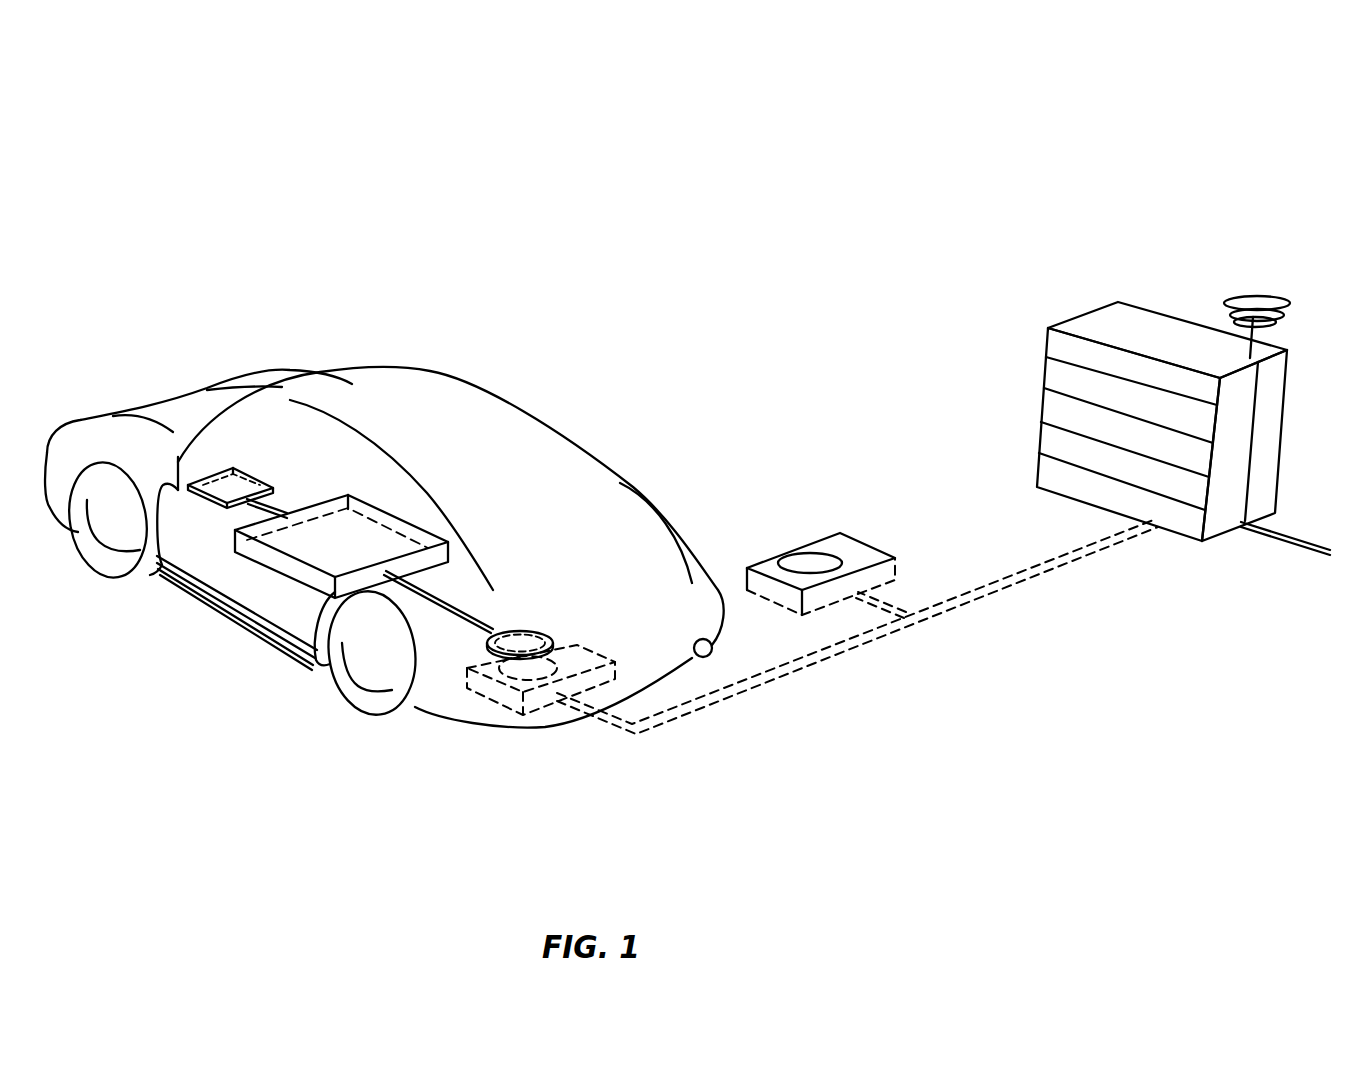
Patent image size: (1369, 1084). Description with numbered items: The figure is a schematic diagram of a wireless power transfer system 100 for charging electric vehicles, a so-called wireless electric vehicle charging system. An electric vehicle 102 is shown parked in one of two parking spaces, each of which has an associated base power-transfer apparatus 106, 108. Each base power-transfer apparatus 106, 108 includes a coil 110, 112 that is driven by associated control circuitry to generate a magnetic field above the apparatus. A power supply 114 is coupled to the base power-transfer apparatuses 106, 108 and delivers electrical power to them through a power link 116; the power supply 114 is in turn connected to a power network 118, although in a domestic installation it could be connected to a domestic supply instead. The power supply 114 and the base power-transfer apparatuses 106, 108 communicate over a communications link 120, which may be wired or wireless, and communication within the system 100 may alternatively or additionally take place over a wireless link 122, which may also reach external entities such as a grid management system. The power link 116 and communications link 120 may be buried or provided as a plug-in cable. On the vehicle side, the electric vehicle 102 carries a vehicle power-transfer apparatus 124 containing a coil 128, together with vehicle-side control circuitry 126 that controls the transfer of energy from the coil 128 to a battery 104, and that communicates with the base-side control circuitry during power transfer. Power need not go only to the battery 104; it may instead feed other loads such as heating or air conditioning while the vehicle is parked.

The wireless power transfer system 100 is at (1279, 84).
The electric vehicle 102 is at (167, 398).
The battery 104 is at (257, 477).
The base power-transfer apparatus 106 is at (490, 670).
The base power-transfer apparatus 108 is at (790, 550).
The coil 110 is at (553, 662).
The coil 112 is at (817, 552).
The power supply 114 is at (1085, 325).
The power link 116 is at (1025, 568).
The power network 118 is at (1295, 552).
The communications link 120 is at (1018, 582).
The wireless link 122 is at (1257, 293).
The vehicle power-transfer apparatus 124 is at (510, 630).
The vehicle-side control circuitry 126 is at (268, 565).
The coil 128 is at (530, 637).